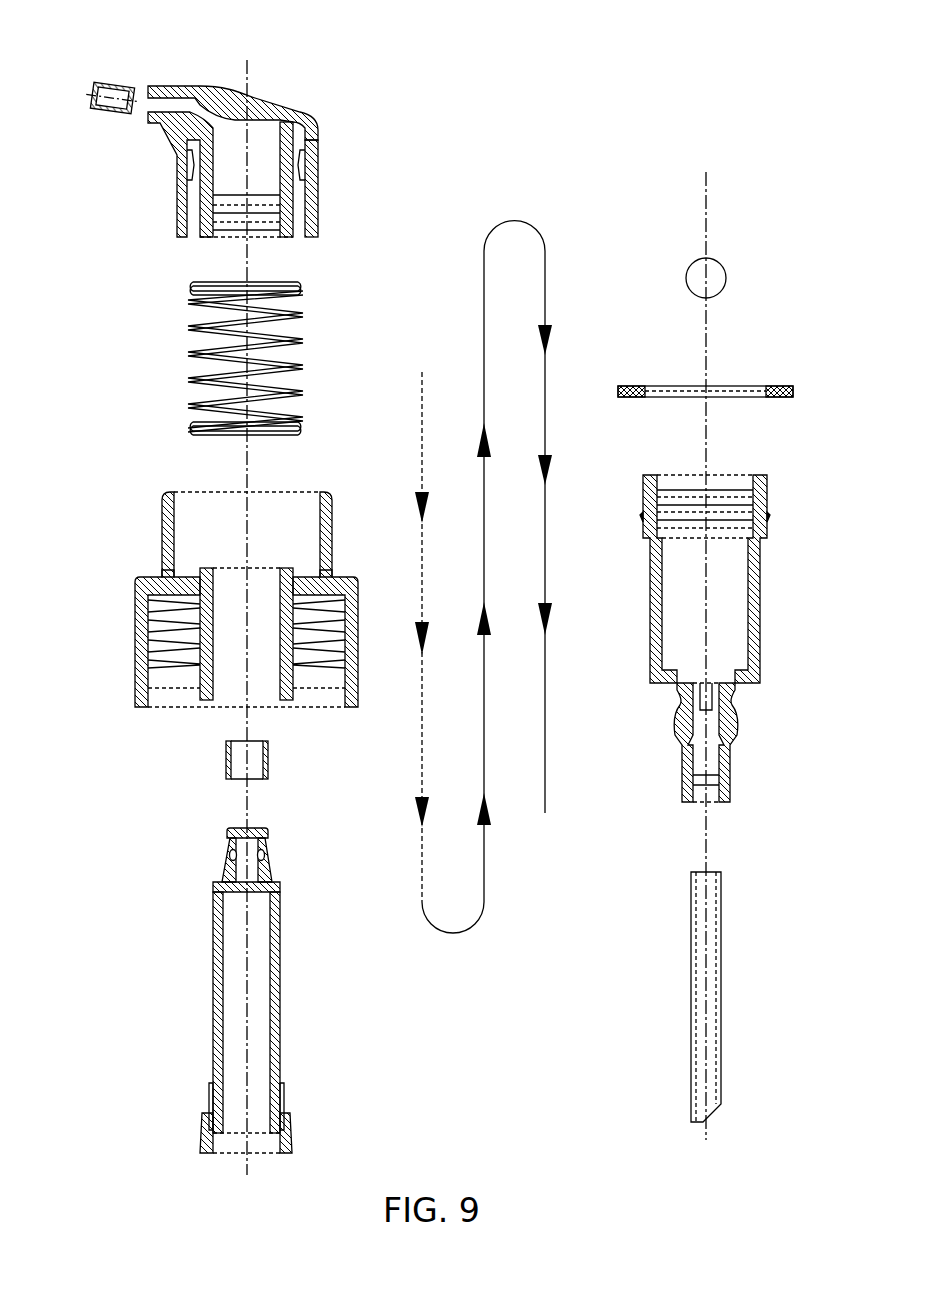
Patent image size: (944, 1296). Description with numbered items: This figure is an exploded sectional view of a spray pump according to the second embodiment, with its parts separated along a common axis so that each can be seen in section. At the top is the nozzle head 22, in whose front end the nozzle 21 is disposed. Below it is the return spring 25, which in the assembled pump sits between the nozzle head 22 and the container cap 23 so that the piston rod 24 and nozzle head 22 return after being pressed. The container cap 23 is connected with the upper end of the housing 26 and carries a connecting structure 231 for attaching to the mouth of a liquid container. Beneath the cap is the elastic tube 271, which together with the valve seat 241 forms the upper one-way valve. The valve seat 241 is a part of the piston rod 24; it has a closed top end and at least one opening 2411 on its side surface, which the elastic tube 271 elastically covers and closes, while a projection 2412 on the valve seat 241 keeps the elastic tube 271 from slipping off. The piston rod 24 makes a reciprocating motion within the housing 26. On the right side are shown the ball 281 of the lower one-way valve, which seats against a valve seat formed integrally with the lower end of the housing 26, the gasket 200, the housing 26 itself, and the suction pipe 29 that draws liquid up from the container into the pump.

The nozzle 21 is at (113, 93).
The nozzle head 22 is at (265, 138).
The return spring 25 is at (280, 360).
The container cap 23 is at (199, 572).
The connecting structure 231 is at (175, 637).
The elastic tube 271 is at (253, 761).
The valve seat 241 is at (239, 842).
The projection 2412 is at (228, 868).
The opening 2411 is at (266, 857).
The piston rod 24 is at (239, 977).
The ball 281 is at (712, 278).
The gasket 200 is at (738, 390).
The housing 26 is at (732, 602).
The suction pipe 29 is at (712, 978).